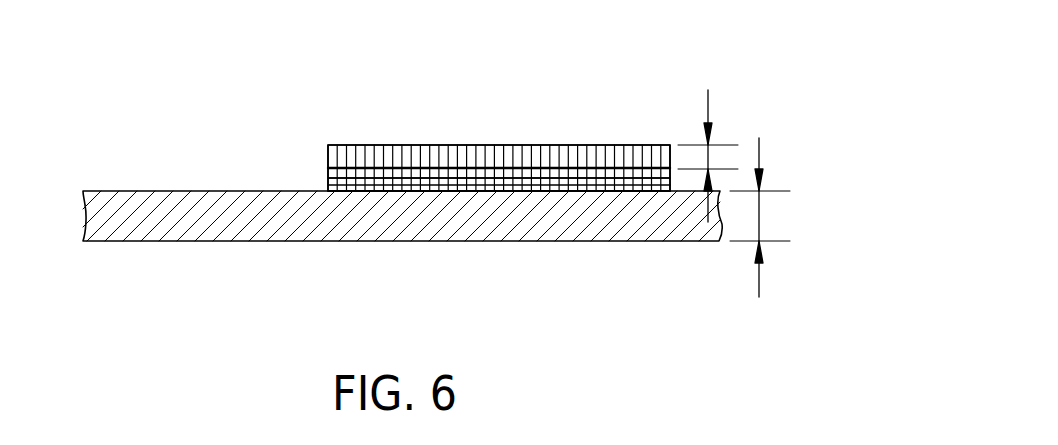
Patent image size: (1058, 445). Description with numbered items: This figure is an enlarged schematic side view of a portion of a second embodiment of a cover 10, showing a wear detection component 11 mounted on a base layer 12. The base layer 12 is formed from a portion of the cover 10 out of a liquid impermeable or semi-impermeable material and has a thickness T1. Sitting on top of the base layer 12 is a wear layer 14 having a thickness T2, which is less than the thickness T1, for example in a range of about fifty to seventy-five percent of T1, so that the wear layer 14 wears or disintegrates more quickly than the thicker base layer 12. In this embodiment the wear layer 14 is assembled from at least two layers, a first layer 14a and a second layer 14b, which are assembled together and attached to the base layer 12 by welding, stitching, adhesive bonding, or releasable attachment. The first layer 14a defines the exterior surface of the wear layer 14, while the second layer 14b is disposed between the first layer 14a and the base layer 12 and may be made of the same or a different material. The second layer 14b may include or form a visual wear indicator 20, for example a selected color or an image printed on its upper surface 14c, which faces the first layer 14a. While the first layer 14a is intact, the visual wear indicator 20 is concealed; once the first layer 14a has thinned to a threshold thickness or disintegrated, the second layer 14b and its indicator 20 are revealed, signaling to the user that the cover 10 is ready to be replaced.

The cover 10 is at (140, 246).
The wear detection component 11 is at (508, 133).
The base layer 12 is at (165, 213).
The wear layer 14 is at (313, 145).
The first layer 14a is at (412, 157).
The second layer 14b is at (377, 183).
The upper surface 14c is at (362, 170).
The visual wear indicator 20 is at (548, 191).
The thickness of the base layer T1 is at (759, 216).
The thickness of the wear layer T2 is at (708, 157).